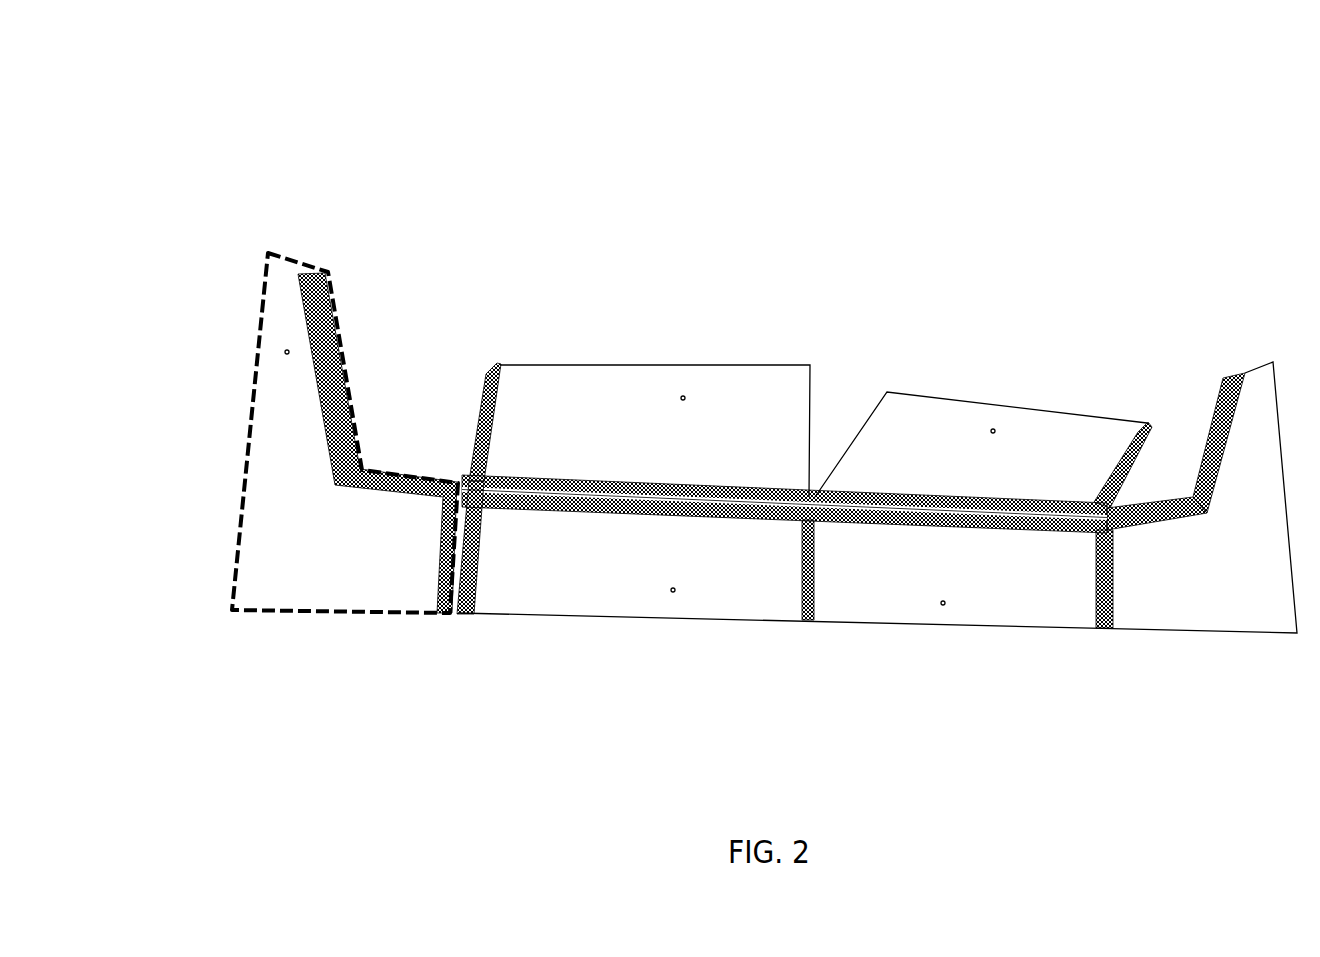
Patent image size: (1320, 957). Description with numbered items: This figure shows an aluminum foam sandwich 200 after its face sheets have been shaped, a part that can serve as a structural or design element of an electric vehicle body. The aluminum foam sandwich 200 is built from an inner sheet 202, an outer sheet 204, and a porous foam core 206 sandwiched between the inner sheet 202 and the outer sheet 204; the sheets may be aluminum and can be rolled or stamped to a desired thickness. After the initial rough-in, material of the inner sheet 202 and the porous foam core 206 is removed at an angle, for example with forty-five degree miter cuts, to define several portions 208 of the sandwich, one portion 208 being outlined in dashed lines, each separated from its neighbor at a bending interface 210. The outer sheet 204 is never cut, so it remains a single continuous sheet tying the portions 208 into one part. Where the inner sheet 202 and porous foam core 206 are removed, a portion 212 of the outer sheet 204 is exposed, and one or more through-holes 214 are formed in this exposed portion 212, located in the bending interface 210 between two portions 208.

The aluminum foam sandwich 200 is at (190, 90).
The inner sheet 202 is at (283, 533).
The outer sheet 204 is at (352, 355).
The porous foam core 206 is at (1218, 412).
The portion 208 is at (263, 308).
The bending interface 210 is at (460, 478).
The portion of the outer sheet 212 is at (665, 502).
The through-hole 214 is at (595, 498).